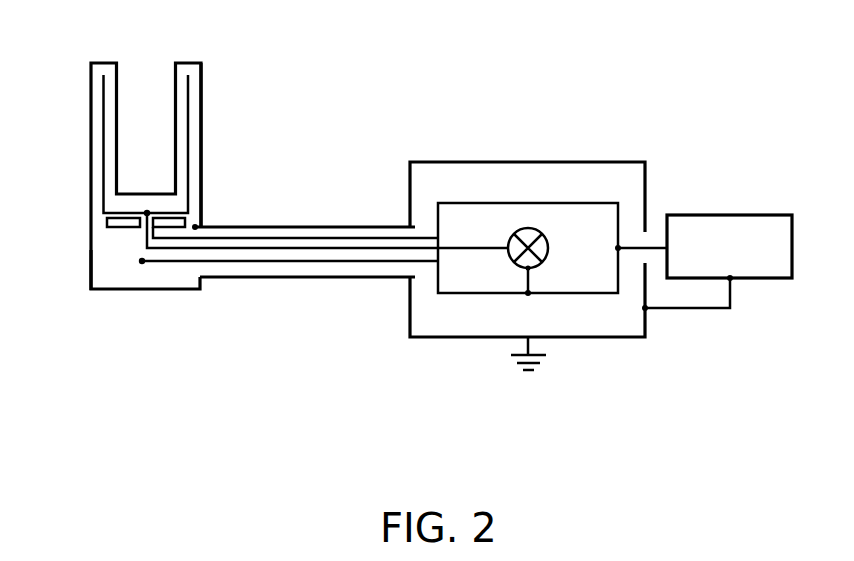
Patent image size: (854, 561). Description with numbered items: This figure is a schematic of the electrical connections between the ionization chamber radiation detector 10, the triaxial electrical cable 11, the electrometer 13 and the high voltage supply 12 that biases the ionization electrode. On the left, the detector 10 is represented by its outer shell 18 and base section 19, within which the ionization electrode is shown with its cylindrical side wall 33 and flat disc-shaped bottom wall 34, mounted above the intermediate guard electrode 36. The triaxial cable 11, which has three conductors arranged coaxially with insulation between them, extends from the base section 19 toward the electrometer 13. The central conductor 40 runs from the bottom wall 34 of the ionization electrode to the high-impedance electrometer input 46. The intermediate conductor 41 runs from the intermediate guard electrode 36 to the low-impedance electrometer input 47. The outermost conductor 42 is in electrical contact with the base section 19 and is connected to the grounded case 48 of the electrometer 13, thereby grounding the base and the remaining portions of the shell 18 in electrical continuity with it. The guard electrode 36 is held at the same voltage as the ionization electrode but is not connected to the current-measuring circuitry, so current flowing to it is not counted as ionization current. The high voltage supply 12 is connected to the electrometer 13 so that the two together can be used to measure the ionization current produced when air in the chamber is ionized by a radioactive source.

The ionization chamber radiation detector 10 is at (104, 55).
The cylindrical side wall of the ionization electrode 33 is at (188, 92).
The outer shell 18 is at (203, 158).
The base section 19 is at (92, 282).
The bottom wall of the ionization electrode 34 is at (106, 219).
The intermediate guard electrode 36 is at (127, 226).
The triaxial electrical cable 11 is at (313, 216).
The outermost conductor 42 is at (390, 280).
The intermediate conductor 41 is at (220, 237).
The central conductor 40 is at (212, 251).
The electrometer 13 is at (483, 162).
The low-impedance electrometer input 47 is at (603, 295).
The high-impedance electrometer input 46 is at (532, 228).
The grounded case of the electrometer 48 is at (570, 338).
The high voltage supply 12 is at (695, 213).